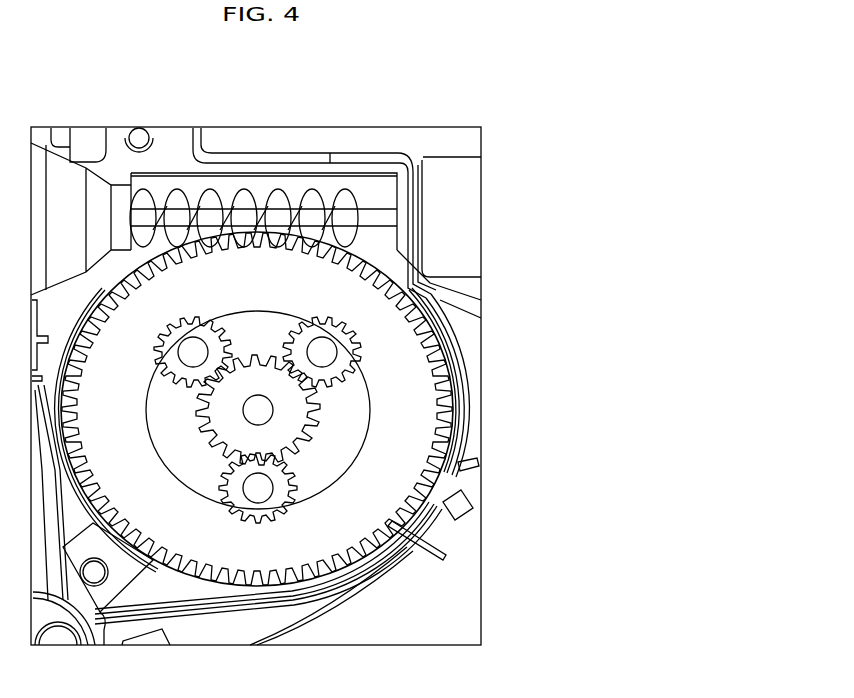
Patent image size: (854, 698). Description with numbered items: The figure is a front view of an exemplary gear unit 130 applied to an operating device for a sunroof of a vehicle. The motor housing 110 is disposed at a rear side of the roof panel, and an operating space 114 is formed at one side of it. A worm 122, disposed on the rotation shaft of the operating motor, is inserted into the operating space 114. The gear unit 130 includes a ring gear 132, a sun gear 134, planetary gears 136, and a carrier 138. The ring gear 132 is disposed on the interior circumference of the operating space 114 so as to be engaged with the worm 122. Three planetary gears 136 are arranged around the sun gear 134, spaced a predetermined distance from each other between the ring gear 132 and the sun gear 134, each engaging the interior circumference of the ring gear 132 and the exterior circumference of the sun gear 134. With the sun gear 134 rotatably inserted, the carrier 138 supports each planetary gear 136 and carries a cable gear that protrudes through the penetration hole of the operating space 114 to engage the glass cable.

The motor housing 110 is at (462, 224).
The operating space 114 is at (394, 184).
The worm 122 is at (230, 250).
The gear unit 130 is at (470, 381).
The ring gear 132 is at (417, 418).
The sun gear 134 is at (280, 433).
The planetary gear 136 is at (282, 497).
The carrier 138 is at (475, 467).